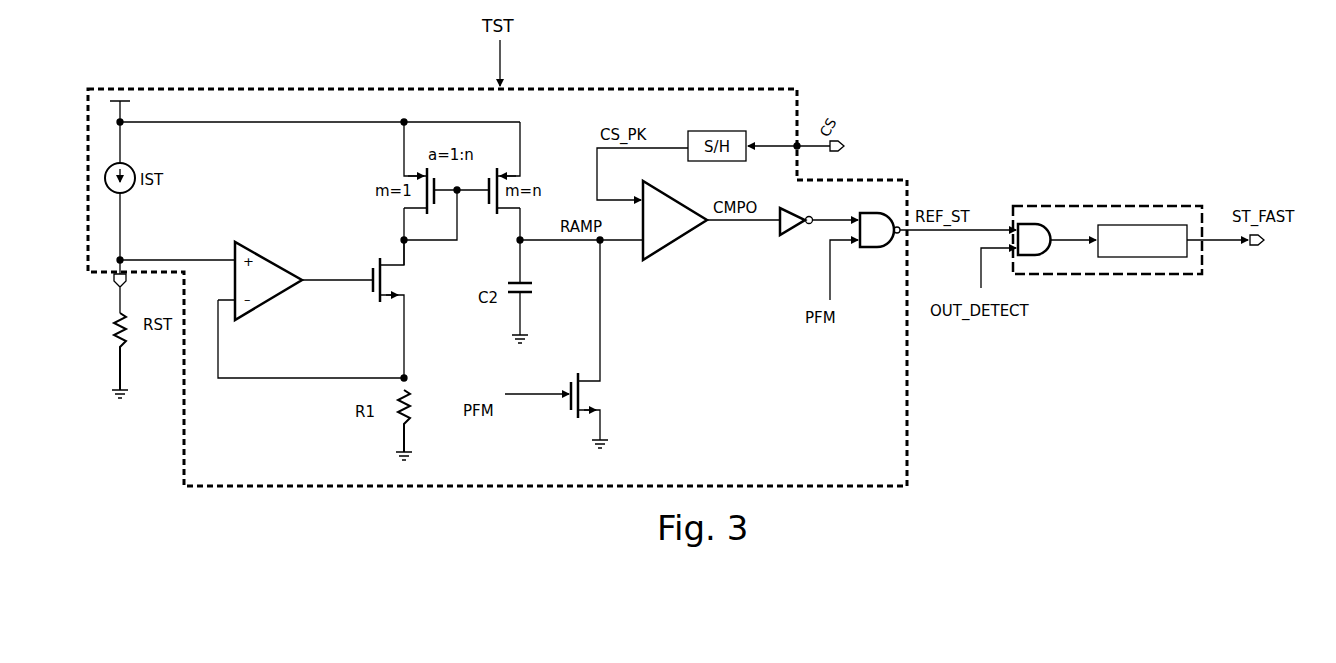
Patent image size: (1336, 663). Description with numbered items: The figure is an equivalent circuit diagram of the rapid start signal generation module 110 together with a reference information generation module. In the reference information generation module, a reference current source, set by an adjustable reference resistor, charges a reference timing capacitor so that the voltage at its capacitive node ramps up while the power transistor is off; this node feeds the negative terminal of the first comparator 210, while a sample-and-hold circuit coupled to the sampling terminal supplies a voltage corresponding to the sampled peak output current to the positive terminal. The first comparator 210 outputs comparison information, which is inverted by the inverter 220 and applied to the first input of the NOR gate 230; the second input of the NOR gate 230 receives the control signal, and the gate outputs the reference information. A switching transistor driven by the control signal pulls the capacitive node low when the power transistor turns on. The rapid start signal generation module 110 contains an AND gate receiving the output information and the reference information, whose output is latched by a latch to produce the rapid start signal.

The rapid start signal generation module 110 is at (1113, 203).
The first comparator 210 is at (693, 238).
The inverter 220 is at (792, 234).
The NOR gate 230 is at (886, 248).